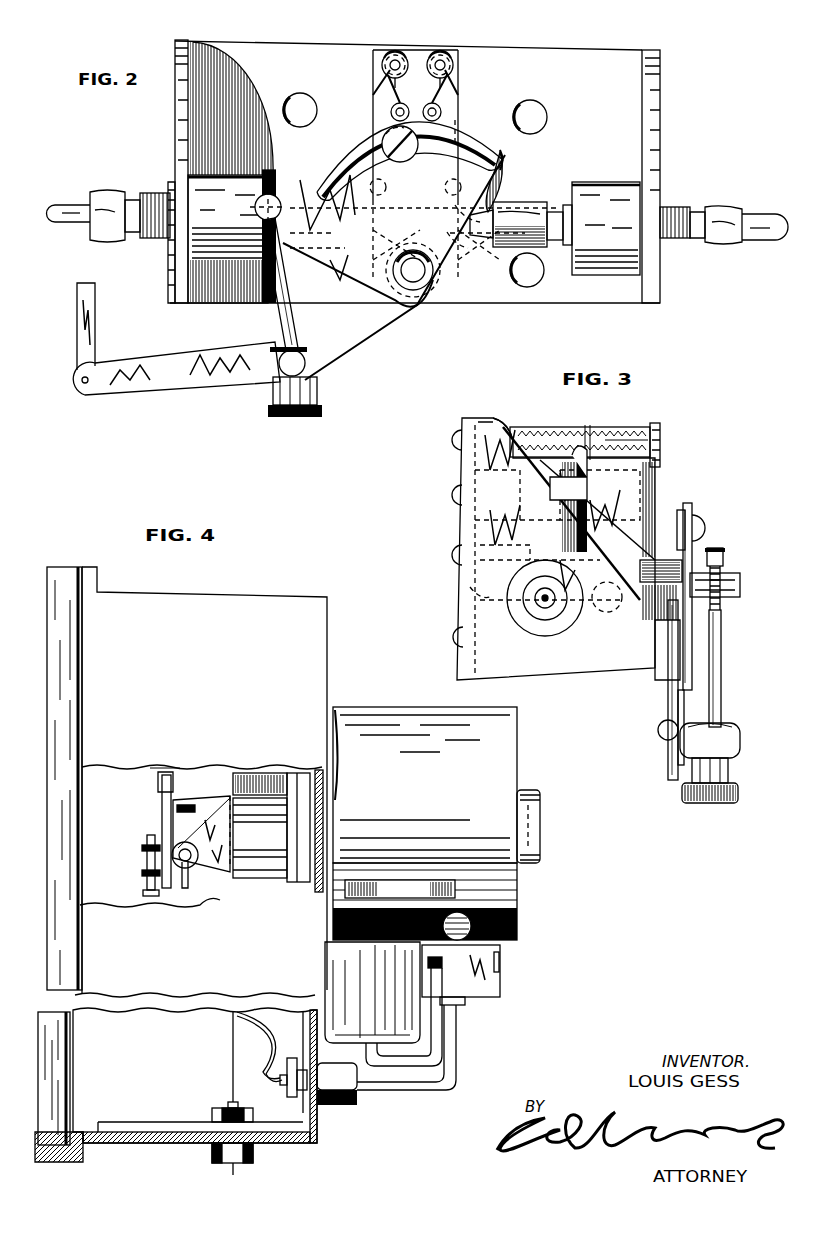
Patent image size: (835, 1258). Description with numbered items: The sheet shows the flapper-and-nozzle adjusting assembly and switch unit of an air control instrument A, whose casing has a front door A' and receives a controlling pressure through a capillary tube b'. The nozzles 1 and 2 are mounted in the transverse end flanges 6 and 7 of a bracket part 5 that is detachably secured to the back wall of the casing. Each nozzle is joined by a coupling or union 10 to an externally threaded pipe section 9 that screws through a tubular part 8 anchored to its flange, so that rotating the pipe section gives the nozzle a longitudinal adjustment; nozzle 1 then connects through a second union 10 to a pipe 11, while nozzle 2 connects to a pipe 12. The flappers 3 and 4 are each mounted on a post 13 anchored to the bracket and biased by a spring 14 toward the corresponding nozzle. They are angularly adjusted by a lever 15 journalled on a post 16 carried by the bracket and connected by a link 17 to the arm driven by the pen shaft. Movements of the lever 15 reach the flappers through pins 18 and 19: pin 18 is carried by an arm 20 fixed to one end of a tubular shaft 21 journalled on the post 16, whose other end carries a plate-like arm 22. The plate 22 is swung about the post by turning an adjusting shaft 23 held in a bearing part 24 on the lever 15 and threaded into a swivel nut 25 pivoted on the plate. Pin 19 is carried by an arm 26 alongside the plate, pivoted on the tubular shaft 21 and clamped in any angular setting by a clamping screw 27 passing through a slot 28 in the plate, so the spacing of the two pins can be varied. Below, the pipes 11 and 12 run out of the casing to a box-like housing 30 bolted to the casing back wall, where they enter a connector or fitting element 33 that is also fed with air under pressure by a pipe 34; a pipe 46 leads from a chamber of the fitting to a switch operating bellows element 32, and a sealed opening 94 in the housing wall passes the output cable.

In FIG. 2, the nozzle 1 is at (358, 236).
In FIG. 2, the nozzle 2 is at (470, 258).
In FIG. 2, the flapper 3 is at (459, 110).
In FIG. 3, the flapper 3 is at (560, 428).
In FIG. 2, the flapper 4 is at (372, 116).
In FIG. 3, the flapper 4 is at (616, 432).
In FIG. 4, the flapper 4 is at (174, 770).
In FIG. 2, the bracket part 5 is at (553, 52).
In FIG. 3, the bracket part 5 is at (458, 518).
In FIG. 4, the bracket part 5 is at (236, 845).
In FIG. 2, the transverse end flange 6 is at (175, 98).
In FIG. 3, the transverse end flange 6 is at (492, 424).
In FIG. 2, the transverse end flange 7 is at (655, 116).
In FIG. 3, the transverse end flange 7 is at (635, 540).
In FIG. 4, the transverse end flange 7 is at (210, 785).
In FIG. 2, the tubular part 8 is at (222, 178).
In FIG. 2, the externally threaded pipe section 9 is at (152, 192).
In FIG. 2, the coupling or union 10 is at (112, 192).
In FIG. 3, the coupling or union 10 is at (547, 580).
In FIG. 2, the pipe 11 is at (60, 204).
In FIG. 3, the pipe 11 is at (540, 588).
In FIG. 2, the pipe 12 is at (758, 214).
In FIG. 4, the pipe 12 is at (190, 882).
In FIG. 2, the post 13 is at (438, 52).
In FIG. 3, the post 13 is at (660, 440).
In FIG. 2, the spring 14 is at (375, 92).
In FIG. 3, the spring 14 is at (605, 430).
In FIG. 2, the lever 15 is at (200, 385).
In FIG. 3, the lever 15 is at (668, 708).
In FIG. 2, the post 16 is at (413, 285).
In FIG. 3, the post 16 is at (453, 637).
In FIG. 2, the link 17 is at (77, 290).
In FIG. 3, the link 17 is at (680, 710).
In FIG. 4, the link 17 is at (160, 806).
In FIG. 2, the pin 18 is at (500, 169).
In FIG. 3, the pin 18 is at (475, 541).
In FIG. 2, the pin 19 is at (368, 187).
In FIG. 3, the pin 19 is at (670, 562).
In FIG. 2, the arm 20 is at (455, 238).
In FIG. 3, the arm 20 is at (470, 588).
In FIG. 3, the tubular shaft 21 is at (660, 672).
In FIG. 2, the plate-like arm 22 is at (504, 150).
In FIG. 3, the plate-like arm 22 is at (690, 502).
In FIG. 2, the adjusting shaft 23 is at (280, 321).
In FIG. 3, the adjusting shaft 23 is at (722, 666).
In FIG. 4, the adjusting shaft 23 is at (146, 866).
In FIG. 2, the bearing part 24 is at (318, 376).
In FIG. 3, the bearing part 24 is at (742, 735).
In FIG. 2, the swivel nut 25 is at (255, 207).
In FIG. 3, the swivel nut 25 is at (741, 588).
In FIG. 2, the arm 26 is at (461, 126).
In FIG. 3, the arm 26 is at (679, 510).
In FIG. 2, the clamping screw 27 is at (384, 135).
In FIG. 3, the clamping screw 27 is at (704, 520).
In FIG. 2, the slot 28 is at (342, 162).
In FIG. 4, the box-like housing 30 is at (400, 708).
In FIG. 4, the switch operating bellows element 32 is at (333, 968).
In FIG. 4, the connector or fitting element 33 is at (500, 990).
In FIG. 4, the pipe 34 is at (457, 1034).
In FIG. 4, the pipe 46 is at (410, 1066).
In FIG. 4, the sealed opening 94 is at (458, 942).
In FIG. 4, the air control instrument A is at (201, 782).
In FIG. 4, the front door A' is at (54, 844).
In FIG. 4, the capillary tube b' is at (176, 1091).